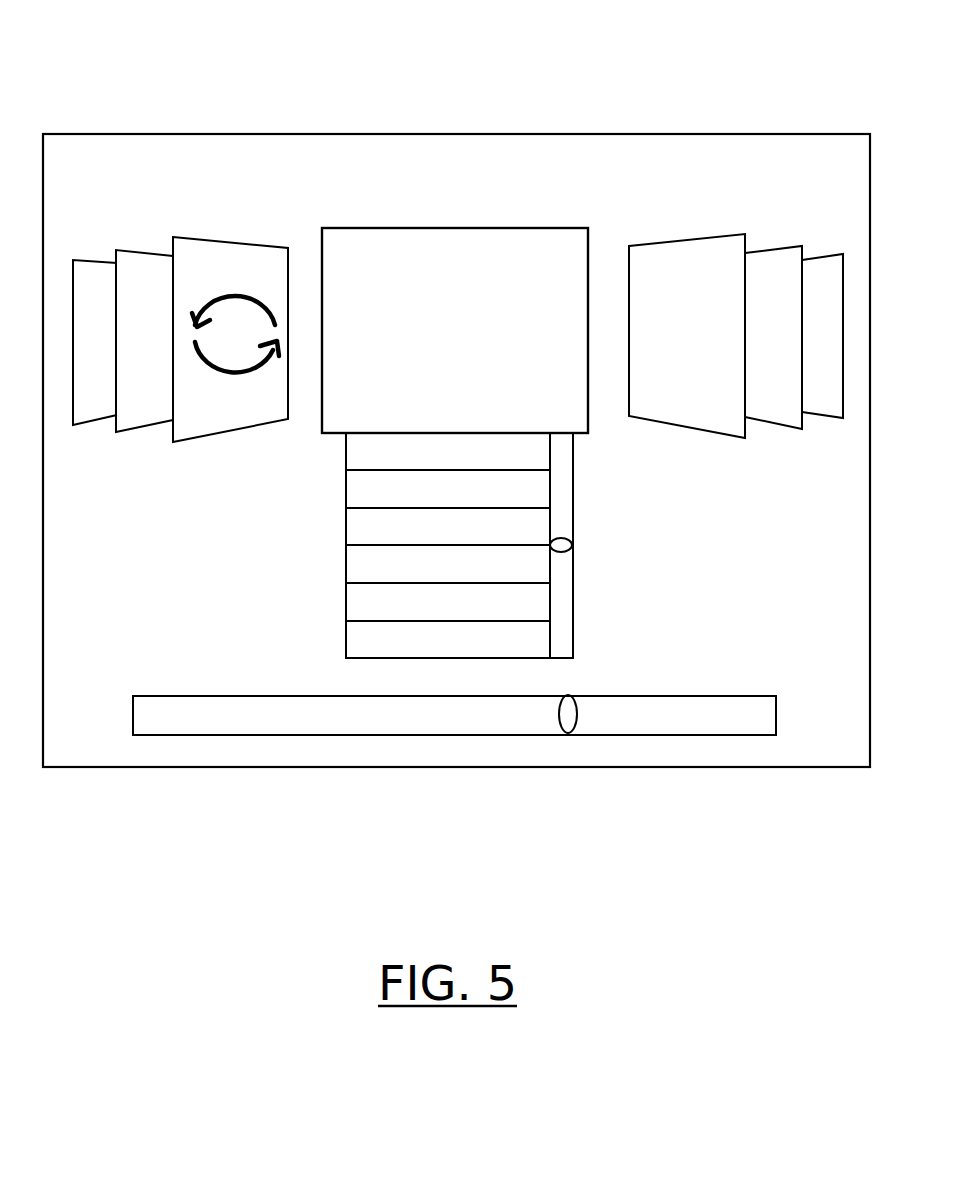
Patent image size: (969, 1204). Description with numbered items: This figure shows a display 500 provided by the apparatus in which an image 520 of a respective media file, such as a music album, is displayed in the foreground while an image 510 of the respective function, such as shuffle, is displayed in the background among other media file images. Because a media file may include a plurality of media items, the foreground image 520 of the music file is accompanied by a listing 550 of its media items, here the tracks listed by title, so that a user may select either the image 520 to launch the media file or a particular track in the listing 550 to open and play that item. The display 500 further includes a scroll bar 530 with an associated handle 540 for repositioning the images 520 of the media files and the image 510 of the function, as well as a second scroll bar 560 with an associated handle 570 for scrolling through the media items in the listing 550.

The display 500 is at (808, 133).
The image of the respective function 510 is at (237, 238).
The image of a respective media file 520 is at (147, 250).
The scroll bar 530 is at (725, 695).
The handle 540 is at (577, 706).
The listing of the media items 550 is at (346, 525).
The scroll bar 560 is at (573, 475).
The handle 570 is at (572, 540).